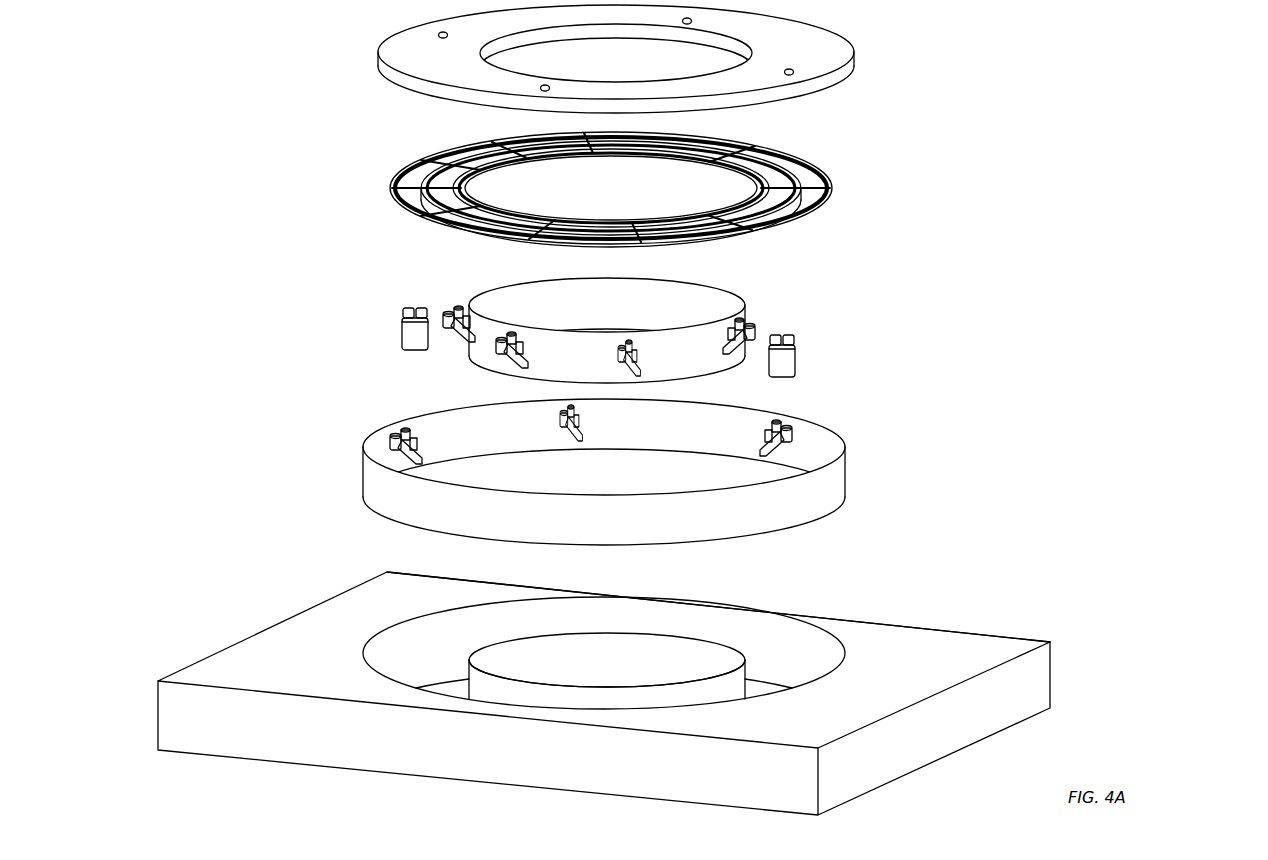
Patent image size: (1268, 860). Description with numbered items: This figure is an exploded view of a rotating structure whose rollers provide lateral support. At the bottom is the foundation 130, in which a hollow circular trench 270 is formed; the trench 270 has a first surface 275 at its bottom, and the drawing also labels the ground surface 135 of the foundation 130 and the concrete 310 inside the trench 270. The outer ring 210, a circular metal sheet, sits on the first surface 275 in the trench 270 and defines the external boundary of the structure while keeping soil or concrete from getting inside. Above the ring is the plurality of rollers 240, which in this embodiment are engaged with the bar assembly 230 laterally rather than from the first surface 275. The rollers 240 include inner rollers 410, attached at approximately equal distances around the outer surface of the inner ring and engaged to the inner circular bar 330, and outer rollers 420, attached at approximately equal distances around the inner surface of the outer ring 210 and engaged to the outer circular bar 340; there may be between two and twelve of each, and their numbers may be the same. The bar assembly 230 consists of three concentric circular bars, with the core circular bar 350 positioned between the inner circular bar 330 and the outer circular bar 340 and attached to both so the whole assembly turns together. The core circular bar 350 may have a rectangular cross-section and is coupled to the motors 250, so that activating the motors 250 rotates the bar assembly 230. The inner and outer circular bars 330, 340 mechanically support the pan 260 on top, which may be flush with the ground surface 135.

The pan 260 is at (834, 44).
The inner circular bar 330 is at (745, 141).
The core circular bar 350 is at (828, 178).
The outer circular bar 340 is at (829, 196).
The bar assembly 230 is at (797, 189).
The motor 250 is at (408, 331).
The inner rollers 410 is at (513, 330).
The outer rollers 420 is at (582, 423).
The rollers 240 is at (794, 361).
The outer ring 210 is at (828, 490).
The trench 270 is at (440, 652).
The first surface 275 is at (762, 684).
The ground surface 135 is at (953, 638).
The foundation 130 is at (1034, 679).
The concrete 310 is at (536, 667).